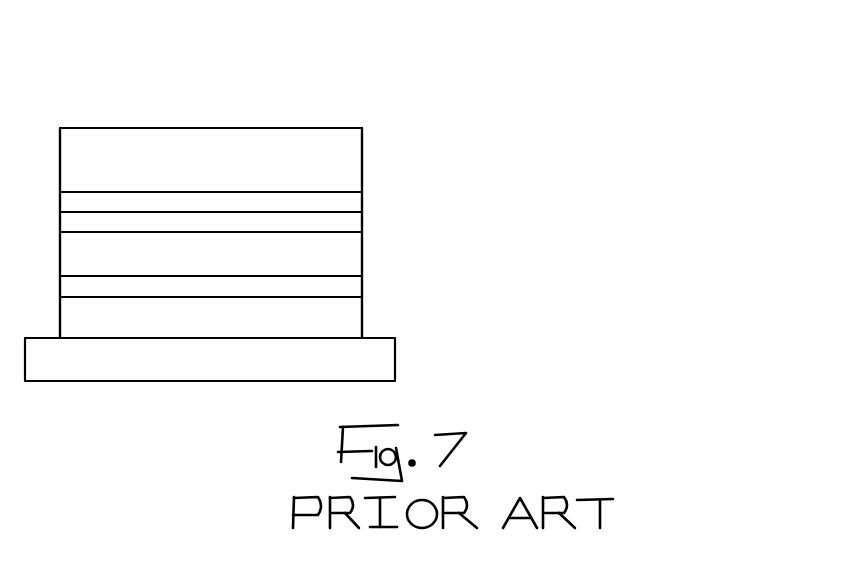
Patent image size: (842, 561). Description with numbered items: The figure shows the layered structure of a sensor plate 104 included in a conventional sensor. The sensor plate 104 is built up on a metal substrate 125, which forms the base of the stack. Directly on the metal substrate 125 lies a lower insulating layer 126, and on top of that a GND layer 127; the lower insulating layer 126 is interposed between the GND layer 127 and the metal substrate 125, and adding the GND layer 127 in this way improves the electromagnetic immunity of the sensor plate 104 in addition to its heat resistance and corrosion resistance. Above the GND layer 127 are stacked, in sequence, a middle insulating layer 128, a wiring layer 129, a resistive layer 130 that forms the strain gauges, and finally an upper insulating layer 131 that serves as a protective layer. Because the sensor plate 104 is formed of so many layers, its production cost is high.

The sensor plate 104 is at (174, 123).
The metal substrate 125 is at (367, 363).
The lower insulating layer 126 is at (350, 327).
The GND layer 127 is at (350, 288).
The middle insulating layer 128 is at (350, 258).
The wiring layer 129 is at (350, 223).
The resistive layer 130 is at (358, 195).
The upper insulating layer 131 is at (353, 157).